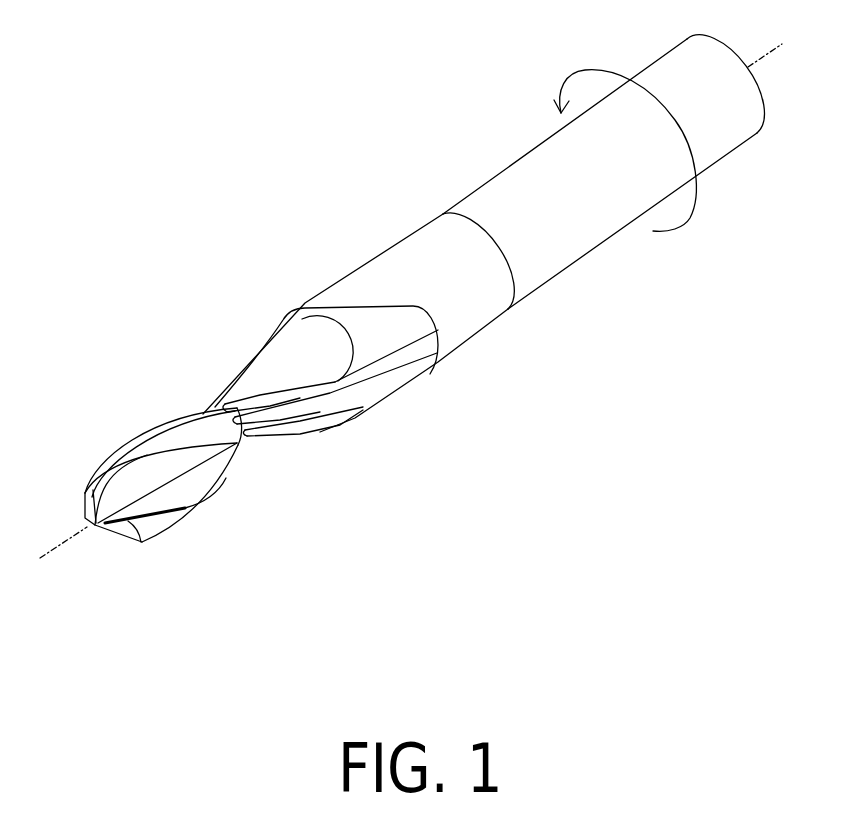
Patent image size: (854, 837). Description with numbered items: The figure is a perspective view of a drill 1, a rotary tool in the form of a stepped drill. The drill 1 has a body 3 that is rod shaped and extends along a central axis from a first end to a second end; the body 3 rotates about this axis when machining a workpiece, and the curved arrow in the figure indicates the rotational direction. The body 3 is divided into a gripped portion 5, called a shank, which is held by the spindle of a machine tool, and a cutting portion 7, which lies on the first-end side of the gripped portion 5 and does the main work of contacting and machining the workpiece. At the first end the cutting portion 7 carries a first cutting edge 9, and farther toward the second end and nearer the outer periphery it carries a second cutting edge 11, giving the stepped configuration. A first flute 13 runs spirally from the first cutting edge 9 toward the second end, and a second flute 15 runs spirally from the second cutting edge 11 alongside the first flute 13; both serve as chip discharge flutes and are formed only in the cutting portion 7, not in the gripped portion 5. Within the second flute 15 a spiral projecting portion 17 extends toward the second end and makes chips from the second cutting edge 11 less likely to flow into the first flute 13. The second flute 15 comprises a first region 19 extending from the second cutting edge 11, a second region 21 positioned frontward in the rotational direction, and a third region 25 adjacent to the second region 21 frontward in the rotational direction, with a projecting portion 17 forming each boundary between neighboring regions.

The drill 1 is at (382, 84).
The body 3 is at (725, 315).
The gripped portion 5 is at (796, 159).
The cutting portion 7 is at (521, 344).
The first cutting edge 9 is at (112, 523).
The second cutting edge 11 is at (283, 423).
The first flute 13 is at (177, 490).
The second flute 15 is at (349, 278).
The projecting portion 17 is at (385, 355).
The first region 19 is at (401, 375).
The second region 21 is at (334, 390).
The third region 25 is at (281, 398).